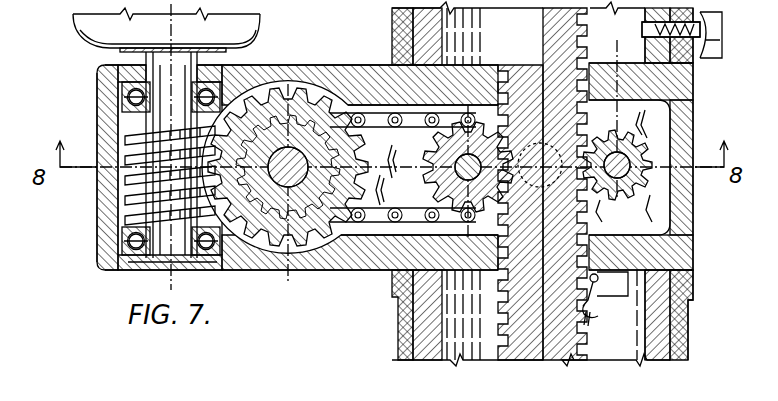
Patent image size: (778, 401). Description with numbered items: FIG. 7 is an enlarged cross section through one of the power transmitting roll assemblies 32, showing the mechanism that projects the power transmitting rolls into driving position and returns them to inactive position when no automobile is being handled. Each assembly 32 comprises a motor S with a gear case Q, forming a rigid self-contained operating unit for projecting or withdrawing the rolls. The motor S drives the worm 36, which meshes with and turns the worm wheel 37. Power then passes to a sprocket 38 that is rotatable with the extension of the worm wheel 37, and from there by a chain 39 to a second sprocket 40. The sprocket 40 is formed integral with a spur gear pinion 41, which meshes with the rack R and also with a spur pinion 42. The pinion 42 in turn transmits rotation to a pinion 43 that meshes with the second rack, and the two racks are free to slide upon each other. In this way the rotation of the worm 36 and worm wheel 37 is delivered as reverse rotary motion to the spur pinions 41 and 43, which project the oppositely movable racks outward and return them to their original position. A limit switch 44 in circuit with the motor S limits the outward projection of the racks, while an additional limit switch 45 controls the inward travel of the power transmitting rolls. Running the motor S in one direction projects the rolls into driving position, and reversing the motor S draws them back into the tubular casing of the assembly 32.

The power transmitting roll assembly 32 is at (704, 312).
The worm 36 is at (125, 187).
The worm wheel 37 is at (303, 90).
The sprocket 38 is at (272, 246).
The chain 39 is at (376, 214).
The sprocket 40 is at (424, 188).
The spur gear pinion 41 is at (426, 160).
The spur pinion 42 is at (566, 128).
The pinion 43 is at (650, 146).
The limit switch 44 is at (592, 304).
The limit switch 45 is at (641, 30).
The motor S is at (166, 30).
The gear case Q is at (678, 247).
The rack R is at (526, 350).